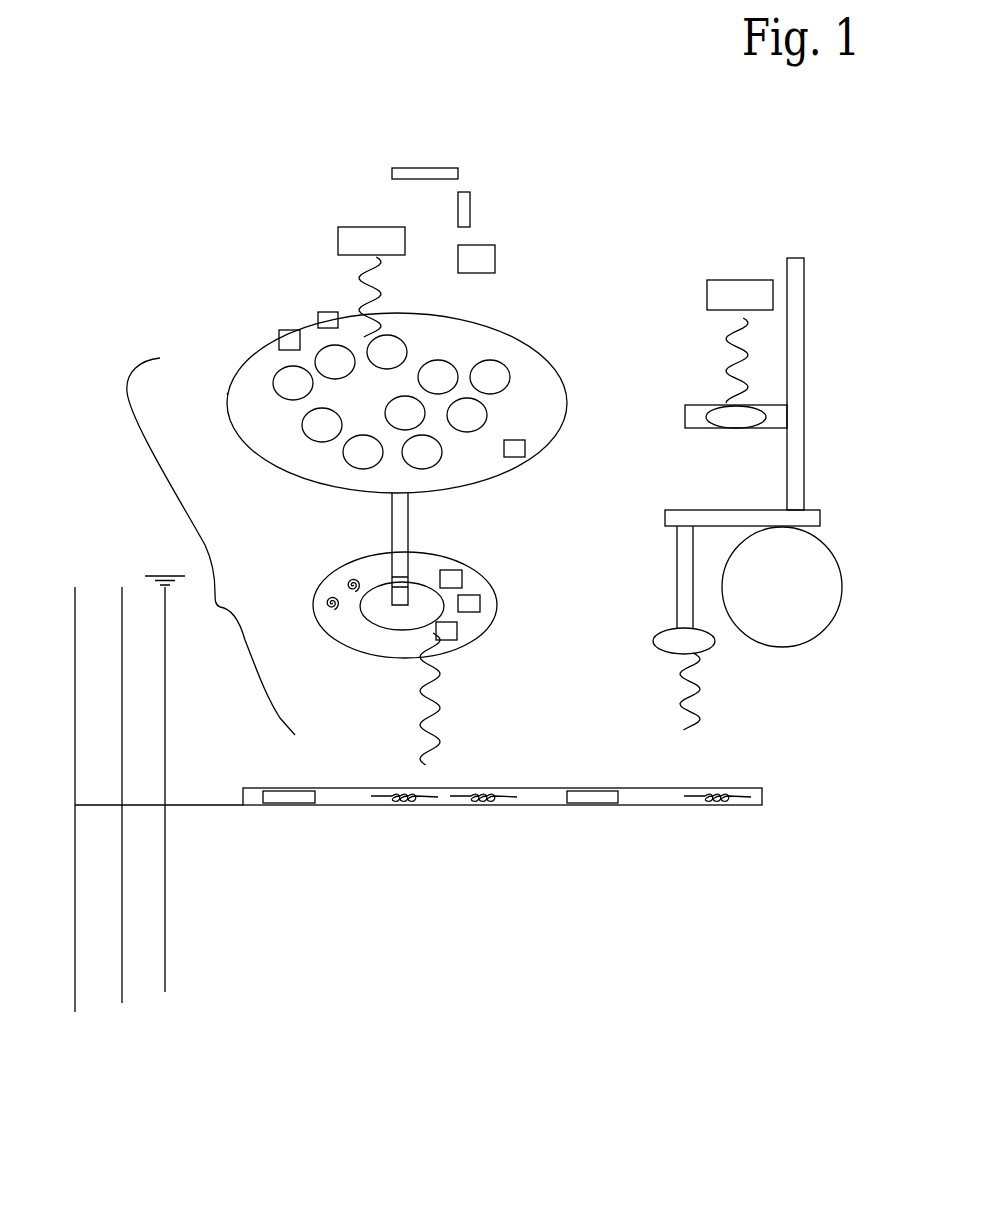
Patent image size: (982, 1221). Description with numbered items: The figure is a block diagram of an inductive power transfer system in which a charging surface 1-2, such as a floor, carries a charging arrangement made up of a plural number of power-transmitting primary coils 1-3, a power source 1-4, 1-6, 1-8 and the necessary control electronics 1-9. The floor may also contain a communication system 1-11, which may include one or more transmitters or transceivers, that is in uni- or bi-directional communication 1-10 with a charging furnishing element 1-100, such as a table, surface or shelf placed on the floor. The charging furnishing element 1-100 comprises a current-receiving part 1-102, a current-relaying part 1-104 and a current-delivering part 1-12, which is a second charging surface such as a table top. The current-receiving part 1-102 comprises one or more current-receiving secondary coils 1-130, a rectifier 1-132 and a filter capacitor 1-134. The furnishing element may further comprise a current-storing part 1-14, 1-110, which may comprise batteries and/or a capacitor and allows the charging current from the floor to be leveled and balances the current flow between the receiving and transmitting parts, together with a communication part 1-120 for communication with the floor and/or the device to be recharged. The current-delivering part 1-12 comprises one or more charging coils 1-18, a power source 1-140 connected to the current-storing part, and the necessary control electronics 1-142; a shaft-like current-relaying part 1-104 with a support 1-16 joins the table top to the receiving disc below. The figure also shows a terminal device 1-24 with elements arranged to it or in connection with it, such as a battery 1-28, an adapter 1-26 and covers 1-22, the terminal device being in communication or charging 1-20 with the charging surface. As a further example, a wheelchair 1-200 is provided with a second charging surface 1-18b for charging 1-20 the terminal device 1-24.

The charging surface 1-2 is at (758, 807).
The power-transmitting primary coils 1-3 is at (395, 807).
The power source 1-4 is at (78, 1005).
The power source 1-6 is at (125, 993).
The power source 1-8 is at (170, 975).
The control electronics 1-9 is at (300, 807).
The communication 1-10 is at (437, 712).
The communication system 1-11 is at (610, 805).
The current-delivering part 1-12 is at (227, 393).
The current-storing part 1-14 is at (387, 582).
The support 1-16 is at (683, 518).
The charging coils 1-18 is at (507, 358).
The second charging surface 1-18b is at (717, 423).
The communication 1-20 is at (397, 282).
The covers 1-22 is at (517, 252).
The terminal device 1-24 is at (335, 242).
The adapter 1-26 is at (473, 207).
The battery 1-28 is at (455, 166).
The charging furnishing element 1-100 is at (220, 607).
The current-receiving part 1-102 is at (388, 652).
The current-relaying part 1-104 is at (388, 520).
The current-storing part 1-110 is at (475, 590).
The communication part 1-120 is at (280, 333).
The current-receiving secondary coils 1-130 is at (320, 597).
The rectifier 1-132 is at (463, 632).
The filter capacitor 1-134 is at (447, 568).
The power source 1-140 is at (317, 317).
The control electronics 1-142 is at (530, 450).
The wheelchair 1-200 is at (805, 268).